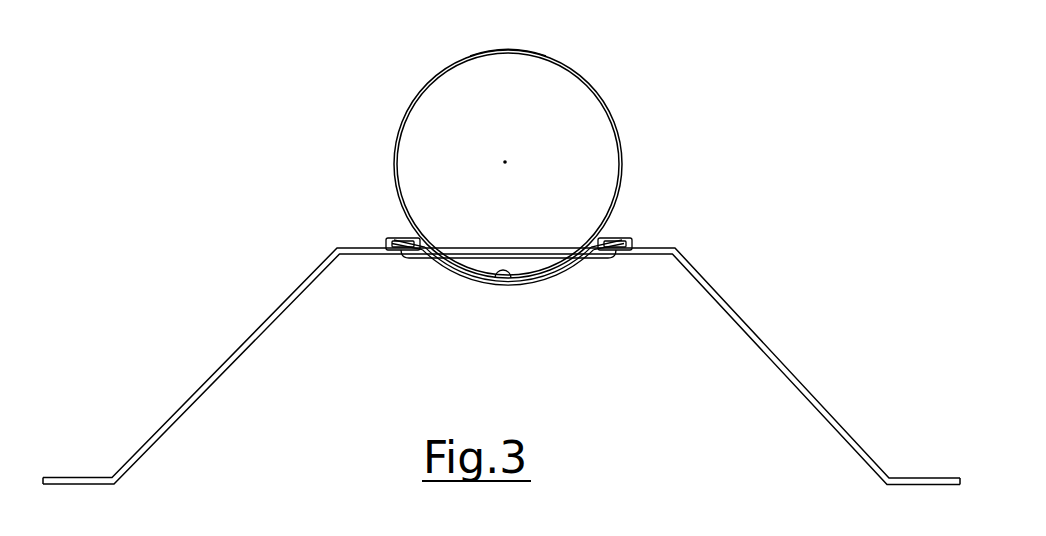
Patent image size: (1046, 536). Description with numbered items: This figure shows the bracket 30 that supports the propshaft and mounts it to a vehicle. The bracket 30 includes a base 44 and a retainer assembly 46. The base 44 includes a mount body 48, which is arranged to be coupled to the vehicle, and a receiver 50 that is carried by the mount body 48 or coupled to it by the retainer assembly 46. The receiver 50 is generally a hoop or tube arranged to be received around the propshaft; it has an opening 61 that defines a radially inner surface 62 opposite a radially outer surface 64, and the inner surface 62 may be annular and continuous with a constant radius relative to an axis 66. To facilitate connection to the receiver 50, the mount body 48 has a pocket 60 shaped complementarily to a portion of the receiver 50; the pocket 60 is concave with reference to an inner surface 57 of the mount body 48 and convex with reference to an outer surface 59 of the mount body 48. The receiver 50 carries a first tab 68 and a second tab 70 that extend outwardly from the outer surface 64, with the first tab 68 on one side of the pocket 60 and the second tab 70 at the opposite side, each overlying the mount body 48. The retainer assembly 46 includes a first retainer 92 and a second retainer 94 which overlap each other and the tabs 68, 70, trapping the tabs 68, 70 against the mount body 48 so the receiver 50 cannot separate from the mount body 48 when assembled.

The bracket 30 is at (402, 47).
The base 44 is at (374, 266).
The retainer assembly 46 is at (629, 200).
The mount body 48 is at (501, 351).
The inner surface 57 is at (350, 247).
The receiver 50 is at (664, 117).
The outer surface 59 is at (355, 255).
The concave pocket 60 is at (497, 281).
The opening 61 is at (588, 115).
The radially inner surface 62 is at (549, 71).
The radially outer surface 64 is at (508, 50).
The axis 66 is at (507, 162).
The first tab 68 is at (398, 243).
The second tab 70 is at (615, 237).
The first retainer 92 is at (416, 266).
The second retainer 94 is at (393, 231).